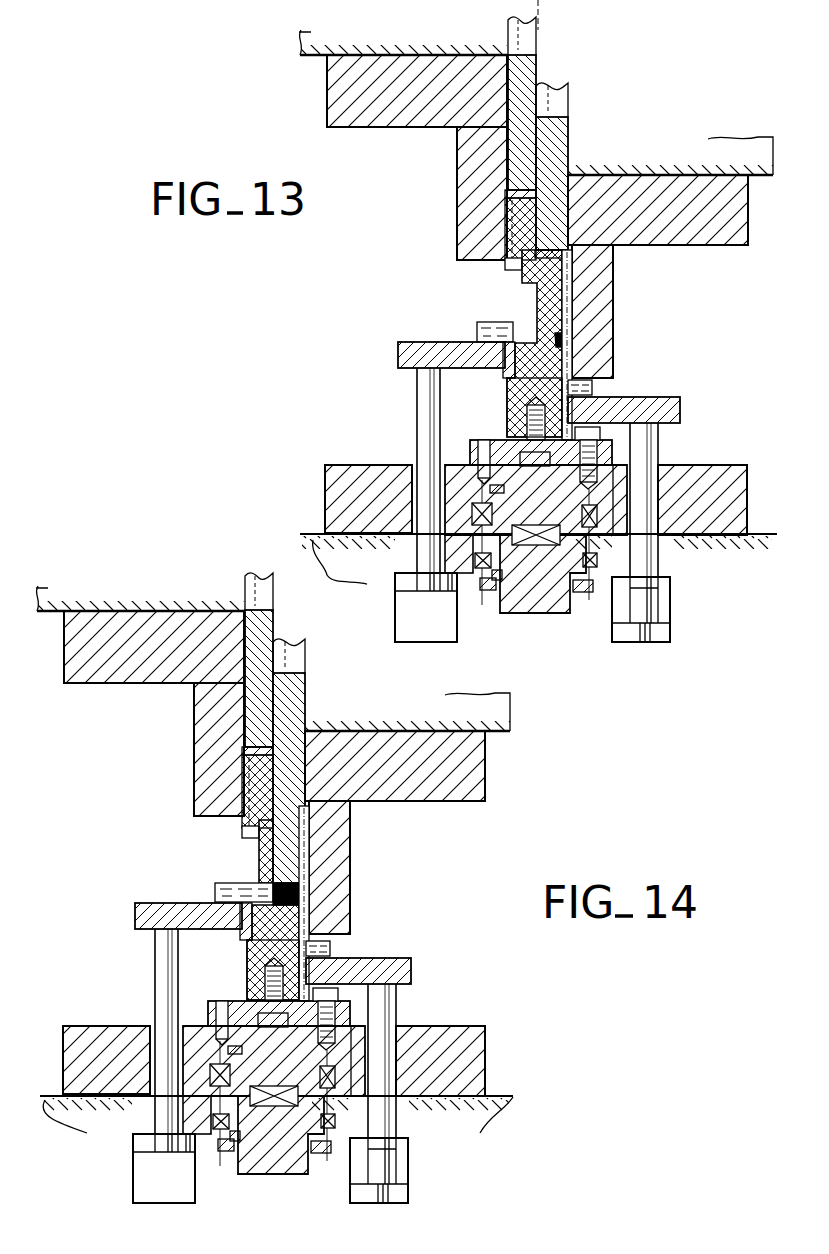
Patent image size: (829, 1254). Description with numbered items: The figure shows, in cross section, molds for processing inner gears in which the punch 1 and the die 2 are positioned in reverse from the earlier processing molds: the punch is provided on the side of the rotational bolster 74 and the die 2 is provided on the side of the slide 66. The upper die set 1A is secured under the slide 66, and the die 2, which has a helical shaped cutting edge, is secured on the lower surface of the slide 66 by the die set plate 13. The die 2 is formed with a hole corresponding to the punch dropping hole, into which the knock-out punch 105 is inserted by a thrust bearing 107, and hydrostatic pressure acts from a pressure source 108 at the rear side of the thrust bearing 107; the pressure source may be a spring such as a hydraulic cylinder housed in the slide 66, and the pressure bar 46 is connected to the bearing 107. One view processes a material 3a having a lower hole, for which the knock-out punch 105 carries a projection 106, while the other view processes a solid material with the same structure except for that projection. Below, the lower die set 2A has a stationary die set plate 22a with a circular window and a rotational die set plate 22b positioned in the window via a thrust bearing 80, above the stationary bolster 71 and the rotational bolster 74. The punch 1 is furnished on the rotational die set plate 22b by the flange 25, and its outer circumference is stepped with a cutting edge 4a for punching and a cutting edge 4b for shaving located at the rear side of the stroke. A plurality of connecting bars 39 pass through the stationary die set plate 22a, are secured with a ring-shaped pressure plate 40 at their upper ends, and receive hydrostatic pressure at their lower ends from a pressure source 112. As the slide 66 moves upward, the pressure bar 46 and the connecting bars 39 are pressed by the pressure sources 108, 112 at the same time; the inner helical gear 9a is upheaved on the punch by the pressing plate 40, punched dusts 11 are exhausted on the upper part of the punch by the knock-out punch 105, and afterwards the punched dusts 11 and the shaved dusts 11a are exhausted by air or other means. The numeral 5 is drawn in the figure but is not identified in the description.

In FIG. 13, the punch 1 is at (513, 422).
In FIG. 14, the punch 1 is at (250, 952).
In FIG. 13, the upper die set 1A is at (712, 258).
In FIG. 14, the upper die set 1A is at (403, 815).
In FIG. 13, the die 2 is at (457, 208).
In FIG. 14, the die 2 is at (195, 795).
In FIG. 13, the lower die set 2A is at (734, 450).
In FIG. 14, the lower die set 2A is at (489, 1023).
In FIG. 13, the material having a lower hole 3a is at (477, 328).
In FIG. 14, the material having a lower hole 3a is at (233, 867).
In FIG. 13, the cutting edge for punching 4a is at (495, 358).
In FIG. 14, the cutting edge for punching 4a is at (200, 900).
In FIG. 13, the cutting edge for shaving 4b is at (505, 394).
In FIG. 14, the cutting edge for shaving 4b is at (247, 977).
In FIG. 13, the slide body 5 is at (527, 282).
In FIG. 14, the slide body 5 is at (247, 830).
In FIG. 13, the inner helical gear 9a is at (592, 388).
In FIG. 14, the inner helical gear 9a is at (333, 946).
In FIG. 13, the punched dusts 11 is at (565, 332).
In FIG. 14, the punched dusts 11 is at (305, 891).
In FIG. 13, the shaved dusts 11a is at (572, 358).
In FIG. 14, the shaved dusts 11a is at (307, 928).
In FIG. 13, the die set plate 13 is at (344, 107).
In FIG. 14, the die set plate 13 is at (93, 672).
In FIG. 13, the stationary die set plate 22a is at (345, 470).
In FIG. 14, the stationary die set plate 22a is at (88, 1037).
In FIG. 13, the rotational die set plate 22b is at (485, 545).
In FIG. 14, the rotational die set plate 22b is at (333, 1040).
In FIG. 13, the flange 25 is at (468, 447).
In FIG. 14, the flange 25 is at (207, 1005).
In FIG. 13, the connecting bars 39 is at (420, 378).
In FIG. 14, the connecting bars 39 is at (170, 950).
In FIG. 13, the pressure plate 40 is at (413, 343).
In FIG. 14, the pressure plate 40 is at (153, 903).
In FIG. 13, the pressure bar 46 is at (530, 80).
In FIG. 14, the pressure bar 46 is at (265, 700).
In FIG. 13, the slide 66 is at (316, 46).
In FIG. 14, the slide 66 is at (100, 588).
In FIG. 13, the stationary bolster 71 is at (772, 595).
In FIG. 14, the stationary bolster 71 is at (503, 1120).
In FIG. 13, the rotational bolster 74 is at (550, 600).
In FIG. 14, the rotational bolster 74 is at (280, 1152).
In FIG. 13, the thrust bearing 80 is at (475, 515).
In FIG. 14, the thrust bearing 80 is at (197, 1102).
In FIG. 13, the knock-out punch 105 is at (513, 237).
In FIG. 14, the knock-out punch 105 is at (240, 773).
In FIG. 13, the projection 106 is at (508, 262).
In FIG. 14, the projection 106 is at (250, 832).
In FIG. 13, the thrust bearing 107 is at (527, 193).
In FIG. 14, the thrust bearing 107 is at (240, 750).
In FIG. 13, the pressure source 108 is at (523, 40).
In FIG. 14, the pressure source 108 is at (258, 583).
In FIG. 13, the pressure source 112 is at (445, 628).
In FIG. 14, the pressure source 112 is at (147, 1170).